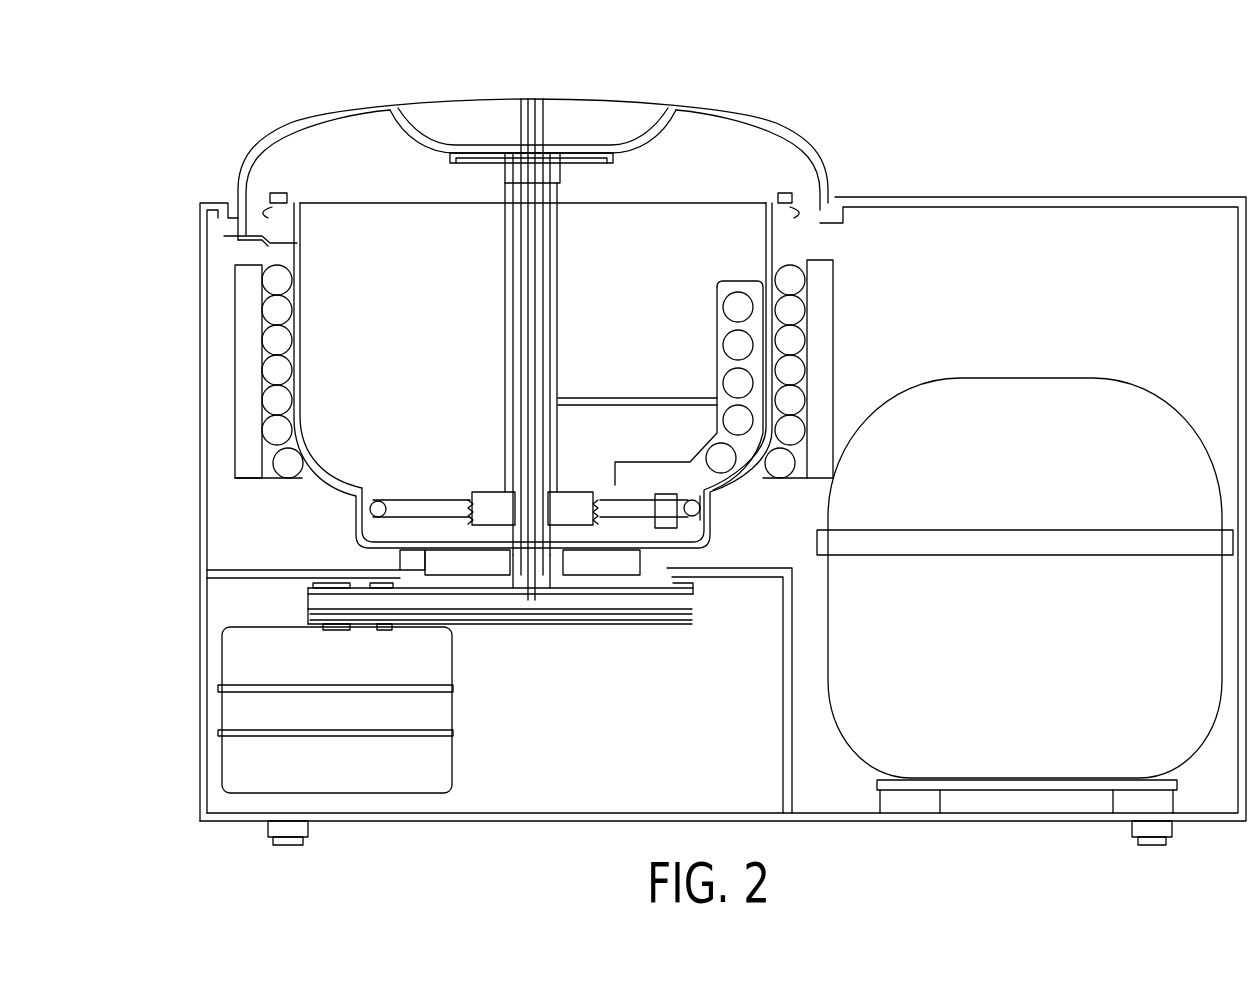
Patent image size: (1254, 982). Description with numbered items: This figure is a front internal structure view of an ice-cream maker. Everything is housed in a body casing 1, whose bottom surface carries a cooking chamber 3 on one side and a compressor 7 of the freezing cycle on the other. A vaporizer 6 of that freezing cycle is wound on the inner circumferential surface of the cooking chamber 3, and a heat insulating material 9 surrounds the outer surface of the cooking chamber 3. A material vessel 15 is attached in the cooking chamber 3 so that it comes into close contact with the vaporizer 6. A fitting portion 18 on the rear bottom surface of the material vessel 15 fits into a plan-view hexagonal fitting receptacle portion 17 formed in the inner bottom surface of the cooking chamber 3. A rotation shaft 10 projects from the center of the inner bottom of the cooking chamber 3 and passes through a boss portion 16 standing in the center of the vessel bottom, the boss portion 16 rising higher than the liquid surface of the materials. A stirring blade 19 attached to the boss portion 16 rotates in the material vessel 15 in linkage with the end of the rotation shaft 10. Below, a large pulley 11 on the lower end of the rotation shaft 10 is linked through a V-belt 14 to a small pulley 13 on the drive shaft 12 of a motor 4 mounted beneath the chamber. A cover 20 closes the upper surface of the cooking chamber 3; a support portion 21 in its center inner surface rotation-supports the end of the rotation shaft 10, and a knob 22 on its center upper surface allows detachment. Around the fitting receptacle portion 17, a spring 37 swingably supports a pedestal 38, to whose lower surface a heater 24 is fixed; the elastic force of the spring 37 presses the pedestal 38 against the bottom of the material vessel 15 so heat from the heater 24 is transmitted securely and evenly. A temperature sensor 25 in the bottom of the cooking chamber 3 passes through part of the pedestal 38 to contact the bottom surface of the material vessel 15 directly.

The body casing 1 is at (198, 203).
The cooking chamber 3 is at (285, 279).
The motor 4 is at (243, 720).
The vaporizer 6 is at (803, 342).
The compressor 7 is at (1033, 743).
The heat insulating material 9 is at (245, 322).
The rotation shaft 10 is at (535, 232).
The large pulley 11 is at (483, 617).
The drive shaft 12 is at (337, 627).
The small pulley 13 is at (310, 592).
The V-belt 14 is at (398, 603).
The material vessel 15 is at (318, 400).
The boss portion 16 is at (553, 263).
The fitting receptacle portion 17 is at (483, 510).
The fitting portion 18 is at (570, 495).
The stirring blade 19 is at (718, 320).
The cover 20 is at (313, 143).
The support portion 21 is at (556, 102).
The knob 22 is at (450, 102).
The heater 24 is at (692, 513).
The temperature sensor 25 is at (657, 560).
The spring 37 is at (605, 532).
The pedestal 38 is at (702, 508).